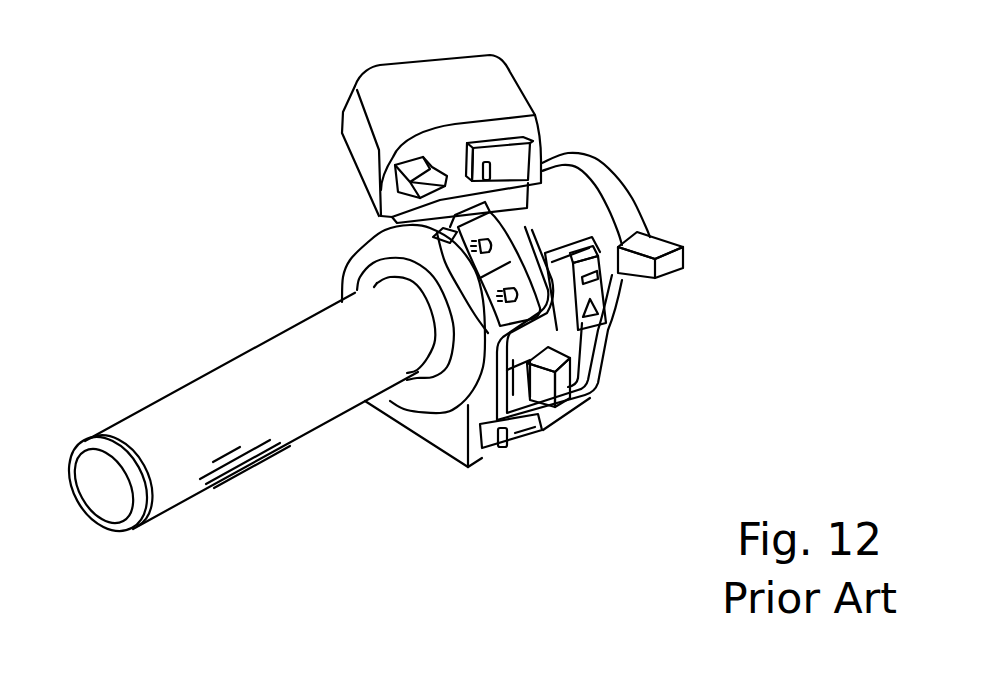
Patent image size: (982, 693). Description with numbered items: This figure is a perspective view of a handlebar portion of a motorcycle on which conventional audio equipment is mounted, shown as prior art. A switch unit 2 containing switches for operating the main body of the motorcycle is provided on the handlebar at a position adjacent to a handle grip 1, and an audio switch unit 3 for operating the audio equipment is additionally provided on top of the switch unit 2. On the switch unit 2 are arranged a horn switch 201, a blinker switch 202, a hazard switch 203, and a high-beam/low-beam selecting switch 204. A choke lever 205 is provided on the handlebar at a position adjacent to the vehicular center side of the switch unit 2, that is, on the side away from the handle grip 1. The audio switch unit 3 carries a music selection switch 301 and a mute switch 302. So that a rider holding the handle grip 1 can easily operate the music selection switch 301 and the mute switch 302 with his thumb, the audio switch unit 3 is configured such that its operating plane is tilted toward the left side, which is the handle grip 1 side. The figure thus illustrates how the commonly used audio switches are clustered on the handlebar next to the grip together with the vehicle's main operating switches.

The handle grip 1 is at (178, 396).
The switch unit 2 is at (447, 443).
The audio switch unit 3 is at (353, 123).
The horn switch 201 is at (513, 447).
The blinker switch 202 is at (563, 397).
The hazard switch 203 is at (605, 302).
The high-beam/low-beam selecting switch 204 is at (380, 237).
The choke lever 205 is at (653, 243).
The music selection switch 301 is at (420, 180).
The mute switch 302 is at (520, 147).